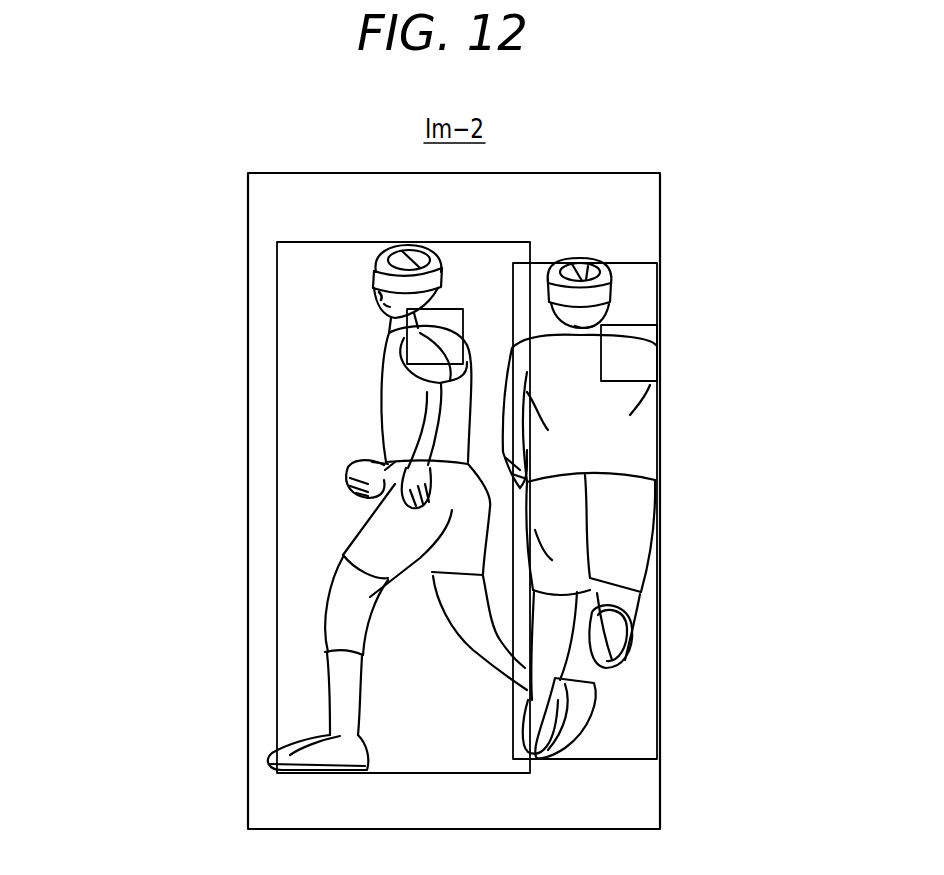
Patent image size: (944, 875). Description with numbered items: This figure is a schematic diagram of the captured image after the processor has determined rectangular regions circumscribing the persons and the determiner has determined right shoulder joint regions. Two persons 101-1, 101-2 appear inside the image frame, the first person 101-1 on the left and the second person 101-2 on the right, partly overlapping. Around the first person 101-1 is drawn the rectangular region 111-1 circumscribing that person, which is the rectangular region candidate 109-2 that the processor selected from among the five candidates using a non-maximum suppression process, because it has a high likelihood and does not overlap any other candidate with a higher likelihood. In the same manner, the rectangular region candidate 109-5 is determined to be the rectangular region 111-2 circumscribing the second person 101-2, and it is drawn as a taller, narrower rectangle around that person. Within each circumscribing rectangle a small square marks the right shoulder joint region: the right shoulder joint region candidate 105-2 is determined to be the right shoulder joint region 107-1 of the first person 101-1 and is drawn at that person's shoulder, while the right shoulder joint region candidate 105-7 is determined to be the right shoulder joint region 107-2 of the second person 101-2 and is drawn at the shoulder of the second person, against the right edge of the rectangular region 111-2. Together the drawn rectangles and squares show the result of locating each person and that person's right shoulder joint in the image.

The person 101-1 is at (376, 418).
The person 101-2 is at (634, 611).
The rectangular region circumscribing the person 111-1 is at (288, 507).
The rectangular region candidate 109-2 is at (277, 251).
The right shoulder joint region 107-1 is at (255, 336).
The right shoulder joint region candidate 105-2 is at (407, 328).
The rectangular region circumscribing the person 111-2 is at (674, 481).
The rectangular region candidate 109-5 is at (613, 263).
The right shoulder joint region 107-2 is at (725, 335).
The right shoulder joint region candidate 105-7 is at (640, 325).